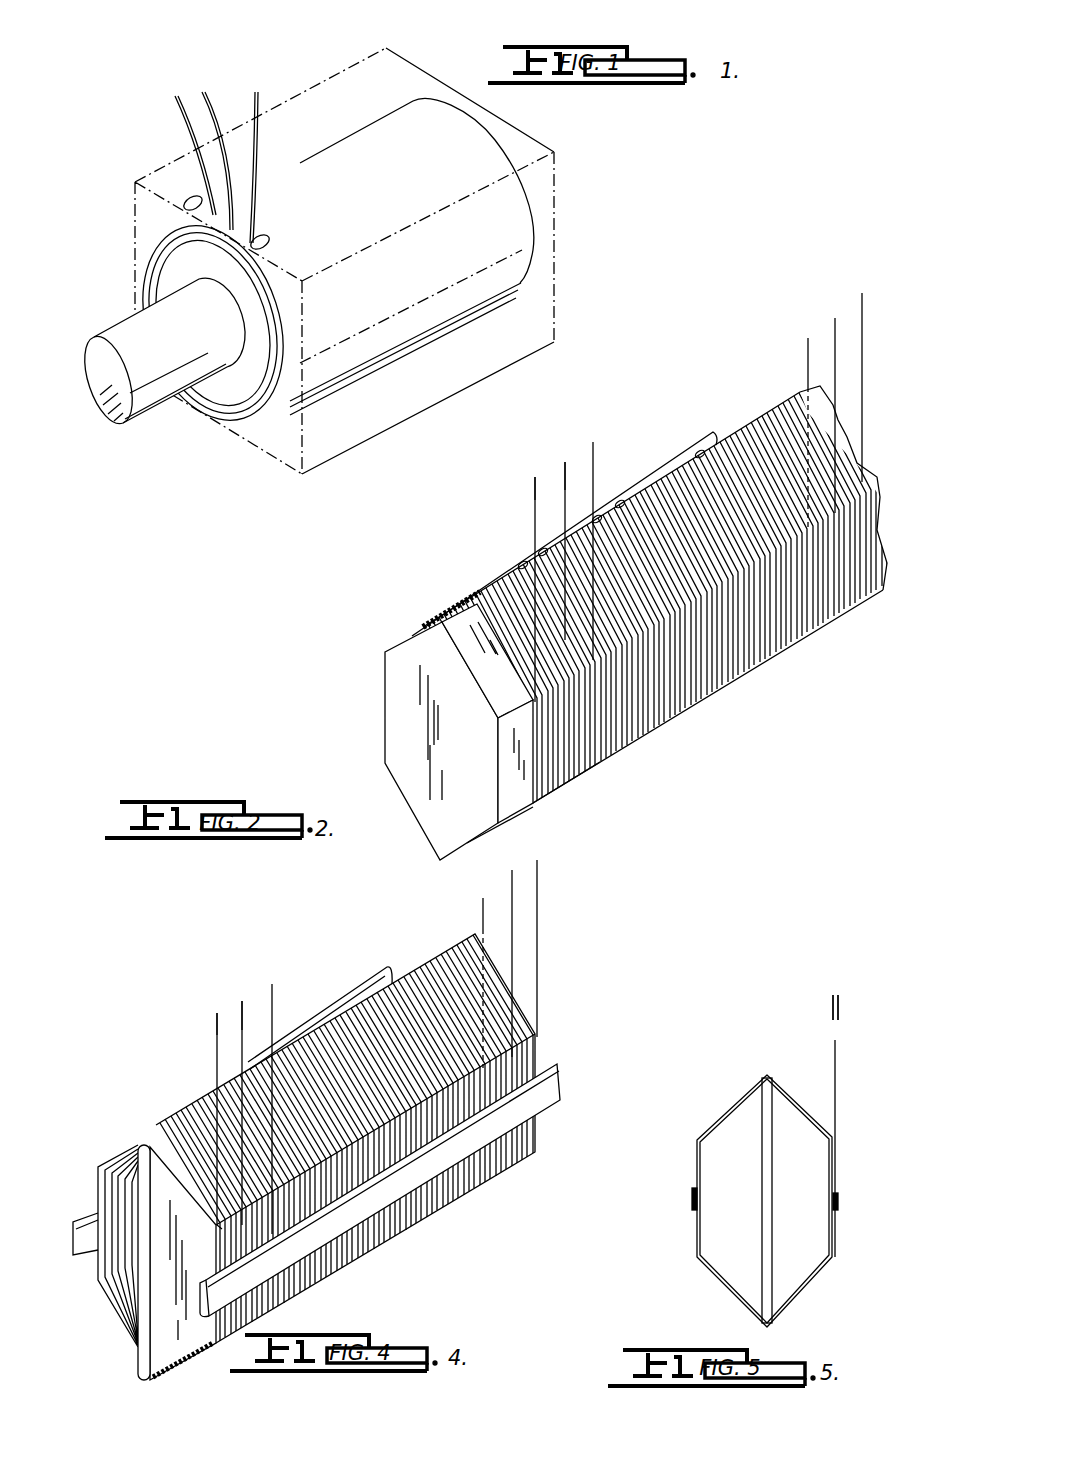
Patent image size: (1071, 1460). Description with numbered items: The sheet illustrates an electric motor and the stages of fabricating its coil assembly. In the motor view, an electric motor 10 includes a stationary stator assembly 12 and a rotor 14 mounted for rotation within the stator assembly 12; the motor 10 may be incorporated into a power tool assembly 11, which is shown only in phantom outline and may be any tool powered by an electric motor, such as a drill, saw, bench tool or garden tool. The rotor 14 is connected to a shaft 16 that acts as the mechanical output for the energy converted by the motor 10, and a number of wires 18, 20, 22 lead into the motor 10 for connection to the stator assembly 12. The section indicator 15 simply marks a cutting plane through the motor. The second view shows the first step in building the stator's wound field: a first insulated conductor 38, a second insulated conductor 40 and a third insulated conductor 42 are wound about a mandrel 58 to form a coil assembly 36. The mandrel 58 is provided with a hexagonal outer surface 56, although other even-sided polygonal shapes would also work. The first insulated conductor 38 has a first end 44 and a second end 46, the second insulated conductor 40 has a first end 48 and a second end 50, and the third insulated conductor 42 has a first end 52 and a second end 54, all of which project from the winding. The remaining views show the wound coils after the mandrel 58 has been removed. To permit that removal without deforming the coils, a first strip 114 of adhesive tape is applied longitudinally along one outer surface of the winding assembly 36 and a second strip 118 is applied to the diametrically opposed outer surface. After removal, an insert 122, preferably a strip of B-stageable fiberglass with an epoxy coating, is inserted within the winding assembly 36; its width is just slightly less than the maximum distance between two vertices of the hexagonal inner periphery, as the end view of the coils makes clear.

In FIG. 1, the electric motor 10 is at (528, 277).
In FIG. 1, the power tool assembly 11 is at (556, 199).
In FIG. 1, the stator assembly 12 is at (517, 242).
In FIG. 1, the rotor 14 is at (232, 402).
In FIG. 1, the section line 15- 15 is at (148, 162).
In FIG. 1, the shaft 16 is at (152, 412).
In FIG. 1, the wire 18 is at (175, 94).
In FIG. 1, the wire 20 is at (203, 91).
In FIG. 1, the wire 22 is at (257, 91).
In FIG. 2, the coil assembly 36 is at (373, 627).
In FIG. 2, the first insulated conductor 38 is at (530, 487).
In FIG. 4, the first insulated conductor 38 is at (213, 1024).
In FIG. 5, the first insulated conductor 38 is at (839, 1077).
In FIG. 2, the second insulated conductor 40 is at (560, 463).
In FIG. 4, the second insulated conductor 40 is at (238, 1008).
In FIG. 2, the third insulated conductor 42 is at (604, 471).
In FIG. 4, the third insulated conductor 42 is at (287, 1010).
In FIG. 2, the first end 44 is at (533, 512).
In FIG. 4, the first end 44 is at (215, 1051).
In FIG. 5, the first end 44 is at (838, 1107).
In FIG. 2, the second end 46 is at (806, 356).
In FIG. 4, the second end 46 is at (481, 919).
In FIG. 2, the first end 48 is at (566, 461).
In FIG. 4, the first end 48 is at (242, 1000).
In FIG. 2, the second end 50 is at (833, 332).
In FIG. 4, the second end 50 is at (514, 917).
In FIG. 2, the first end 52 is at (595, 443).
In FIG. 4, the first end 52 is at (275, 986).
In FIG. 2, the second end 54 is at (862, 312).
In FIG. 4, the second end 54 is at (539, 879).
In FIG. 2, the hexagonal outer surface 56 is at (513, 795).
In FIG. 2, the mandrel 58 is at (385, 712).
In FIG. 4, the first strip of adhesive tape 114 is at (507, 1113).
In FIG. 5, the first strip of adhesive tape 114 is at (841, 1202).
In FIG. 4, the second strip of adhesive tape 118 is at (68, 1243).
In FIG. 5, the second strip of adhesive tape 118 is at (687, 1203).
In FIG. 4, the insert 122 is at (135, 1365).
In FIG. 5, the insert 122 is at (758, 1273).